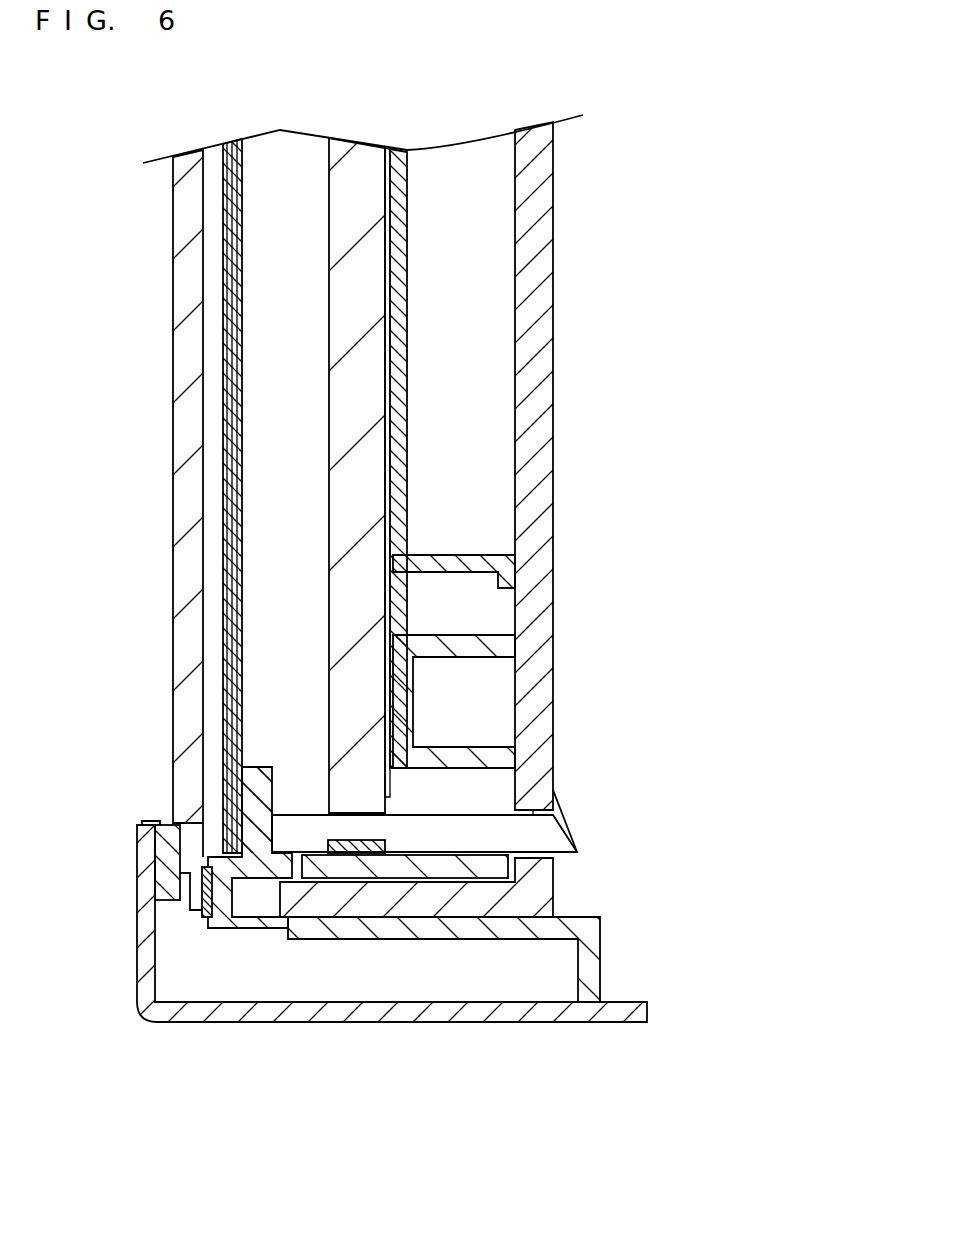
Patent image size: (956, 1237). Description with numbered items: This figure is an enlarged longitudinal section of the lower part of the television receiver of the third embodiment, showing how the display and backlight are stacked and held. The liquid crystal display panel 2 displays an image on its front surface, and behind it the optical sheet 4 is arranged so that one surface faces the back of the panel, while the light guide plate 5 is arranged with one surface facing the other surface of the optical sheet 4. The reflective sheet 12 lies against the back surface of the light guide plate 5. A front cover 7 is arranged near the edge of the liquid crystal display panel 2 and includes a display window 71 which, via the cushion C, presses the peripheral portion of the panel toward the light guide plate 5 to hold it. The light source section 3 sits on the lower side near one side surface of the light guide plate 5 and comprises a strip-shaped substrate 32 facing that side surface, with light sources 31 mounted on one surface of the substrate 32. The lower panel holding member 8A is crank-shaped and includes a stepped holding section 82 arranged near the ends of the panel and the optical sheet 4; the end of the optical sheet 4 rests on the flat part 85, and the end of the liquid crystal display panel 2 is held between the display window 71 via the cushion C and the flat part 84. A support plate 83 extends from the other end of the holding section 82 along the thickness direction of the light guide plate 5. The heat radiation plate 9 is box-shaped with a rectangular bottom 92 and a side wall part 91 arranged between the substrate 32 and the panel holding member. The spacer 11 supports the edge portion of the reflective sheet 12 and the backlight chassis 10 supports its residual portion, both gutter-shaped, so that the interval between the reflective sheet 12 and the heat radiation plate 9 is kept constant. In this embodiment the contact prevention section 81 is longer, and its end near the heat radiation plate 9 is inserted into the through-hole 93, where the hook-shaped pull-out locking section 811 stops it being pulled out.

The liquid crystal display panel 2 is at (182, 370).
The optical sheet 4 is at (222, 293).
The light guide plate 5 is at (335, 240).
The front cover 7 is at (348, 963).
The display window 71 is at (150, 822).
The cushion C is at (163, 877).
The contact prevention section 81 is at (194, 883).
The holding section 82 is at (213, 850).
The flat part 85 is at (248, 792).
The flat part 84 is at (220, 915).
The lower panel holding member 8A is at (271, 934).
The pull-out locking section 811 is at (565, 838).
The support plate 83 is at (592, 957).
The heat radiation plate 9 is at (527, 487).
The bottom 92 is at (515, 329).
The through-hole 93 is at (555, 820).
The backlight chassis 10 is at (455, 560).
The spacer 11 is at (483, 765).
The reflective sheet 12 is at (388, 596).
The light source section 3 is at (405, 993).
The light source 31 is at (365, 852).
The substrate 32 is at (348, 870).
The side wall part 91 is at (472, 905).